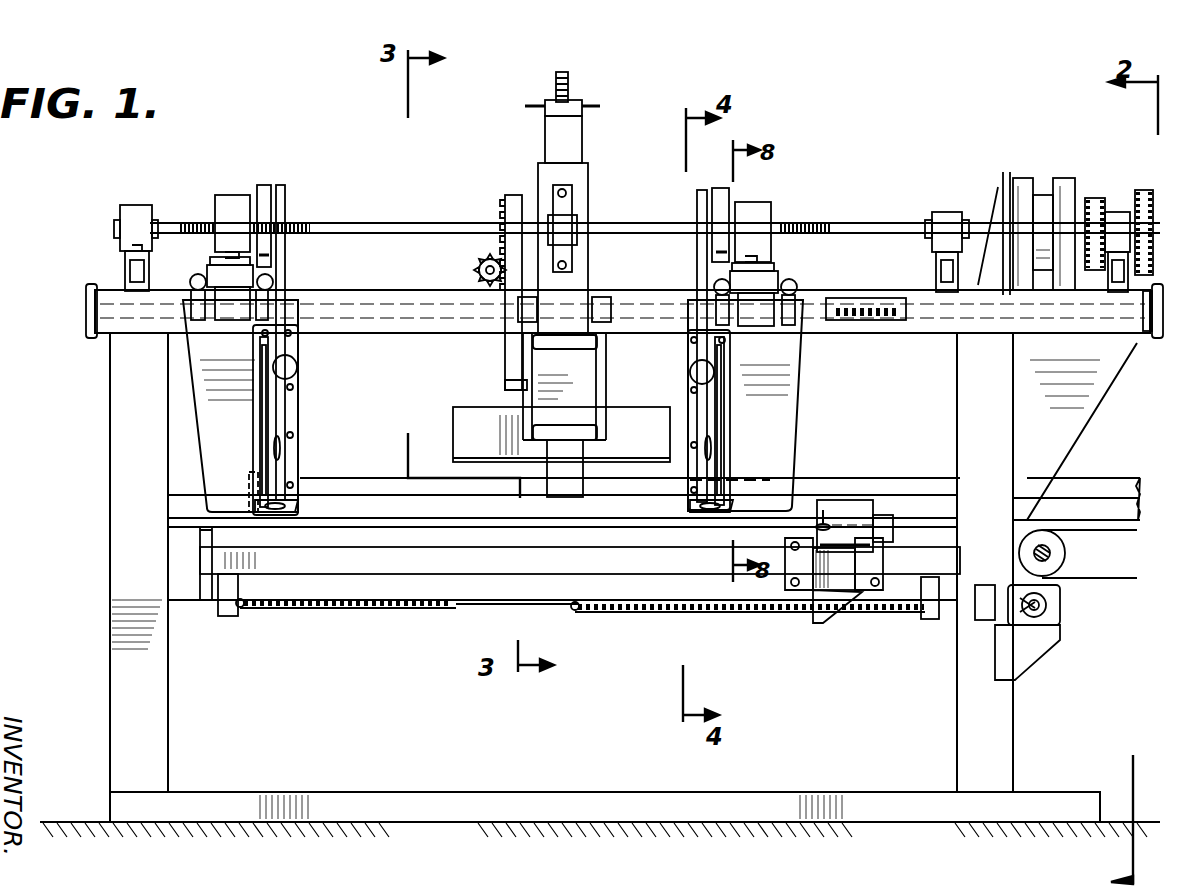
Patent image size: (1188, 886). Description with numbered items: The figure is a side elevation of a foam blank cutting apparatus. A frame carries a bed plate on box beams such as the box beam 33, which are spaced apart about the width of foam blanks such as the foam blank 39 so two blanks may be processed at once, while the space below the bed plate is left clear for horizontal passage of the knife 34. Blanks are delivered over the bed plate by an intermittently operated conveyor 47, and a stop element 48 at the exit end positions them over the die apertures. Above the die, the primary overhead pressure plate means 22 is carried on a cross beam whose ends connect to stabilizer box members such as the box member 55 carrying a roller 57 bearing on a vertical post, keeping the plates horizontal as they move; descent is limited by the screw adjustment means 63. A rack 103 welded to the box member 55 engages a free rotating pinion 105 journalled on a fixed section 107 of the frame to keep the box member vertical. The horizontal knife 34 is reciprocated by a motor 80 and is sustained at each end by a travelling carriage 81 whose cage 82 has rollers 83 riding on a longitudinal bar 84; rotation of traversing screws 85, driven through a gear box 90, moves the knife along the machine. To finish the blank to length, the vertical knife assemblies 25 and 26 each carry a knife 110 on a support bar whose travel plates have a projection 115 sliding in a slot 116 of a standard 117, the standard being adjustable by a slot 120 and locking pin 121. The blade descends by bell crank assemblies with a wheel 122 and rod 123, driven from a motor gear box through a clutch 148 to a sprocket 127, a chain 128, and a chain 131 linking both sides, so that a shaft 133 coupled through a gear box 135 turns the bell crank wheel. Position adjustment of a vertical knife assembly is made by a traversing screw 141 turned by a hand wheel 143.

The primary overhead pressure plate means 22 is at (448, 408).
The vertical knife assembly 25 is at (308, 408).
The vertical knife assembly 26 is at (684, 388).
The box beam 33 is at (577, 520).
The knife 34 is at (826, 506).
The foam blank 39 is at (903, 494).
The conveyor 47 is at (1100, 583).
The stop element 48 is at (232, 498).
The box member 55 is at (525, 370).
The roller 57 is at (567, 428).
The screw adjustment means 63 is at (572, 86).
The motor 80 is at (848, 500).
The travelling carriage 81 is at (825, 630).
The cage 82 is at (790, 565).
The rollers 83 is at (800, 585).
The longitudinal bar 84 is at (630, 575).
The traversing screws 85 is at (665, 610).
The gear box 90 is at (1065, 612).
The rack 103 is at (508, 202).
The pinion 105 is at (472, 272).
The fixed section 107 is at (333, 290).
The knife 110 is at (698, 450).
The projection 115 is at (260, 408).
The slot 116 is at (292, 434).
The standard 117 is at (258, 348).
The slot 120 is at (288, 474).
The locking pin 121 is at (293, 475).
The wheel 122 is at (266, 190).
The rod 123 is at (292, 206).
The sprocket 127 is at (1092, 202).
The chain 128 is at (1130, 210).
The chain 131 is at (1075, 429).
The shaft 133 is at (343, 224).
The gear box 135 is at (772, 212).
The traversing screw 141 is at (906, 322).
The hand wheel 143 is at (90, 325).
The clutch 148 is at (1043, 180).